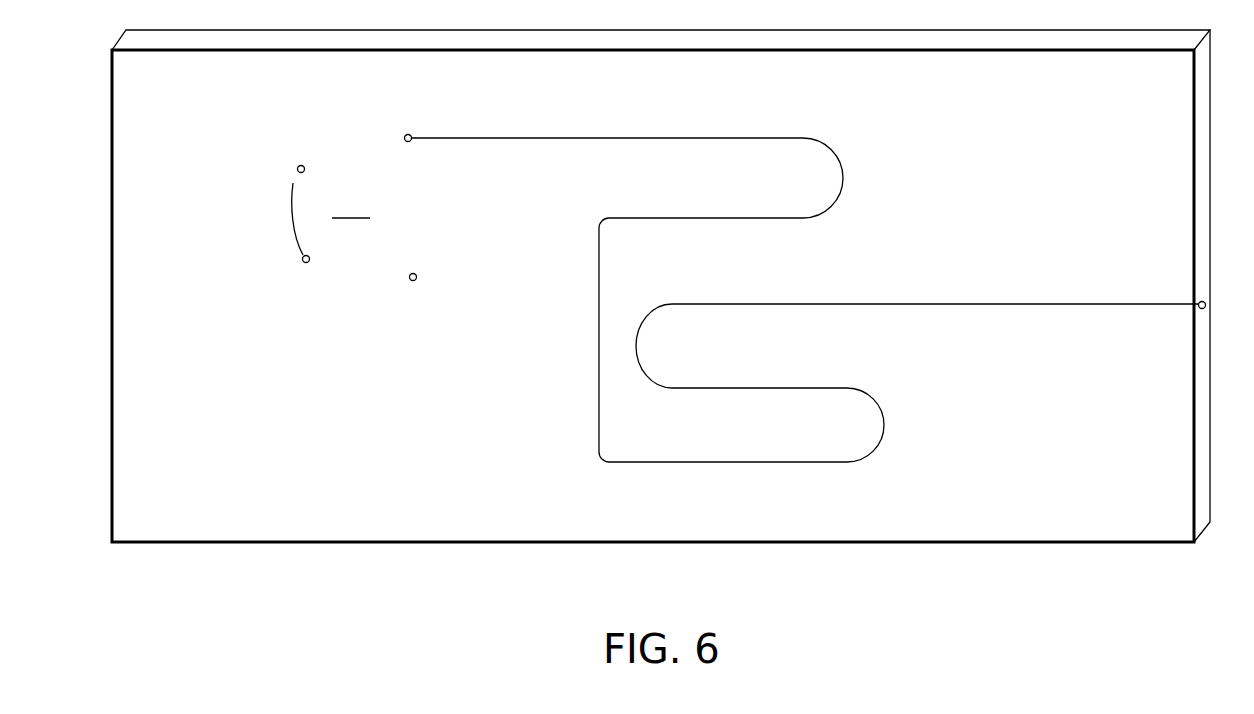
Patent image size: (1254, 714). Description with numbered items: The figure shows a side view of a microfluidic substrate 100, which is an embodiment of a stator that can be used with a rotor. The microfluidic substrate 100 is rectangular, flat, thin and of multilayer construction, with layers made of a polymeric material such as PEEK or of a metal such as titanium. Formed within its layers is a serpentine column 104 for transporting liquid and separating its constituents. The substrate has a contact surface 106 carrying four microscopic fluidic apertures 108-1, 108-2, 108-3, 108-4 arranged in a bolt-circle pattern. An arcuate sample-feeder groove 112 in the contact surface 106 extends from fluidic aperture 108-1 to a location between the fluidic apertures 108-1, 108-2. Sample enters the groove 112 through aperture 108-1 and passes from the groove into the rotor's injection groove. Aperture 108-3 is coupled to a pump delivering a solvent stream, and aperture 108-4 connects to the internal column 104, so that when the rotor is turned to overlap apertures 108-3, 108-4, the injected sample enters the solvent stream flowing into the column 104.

The microfluidic substrate 100 is at (112, 50).
The serpentine column 104 is at (840, 303).
The contact surface 106 is at (355, 218).
The fluidic aperture 108-1 is at (305, 263).
The fluidic aperture 108-2 is at (300, 165).
The fluidic aperture 108-3 is at (409, 134).
The fluidic aperture 108-4 is at (412, 281).
The sample-feeder groove 112 is at (293, 218).